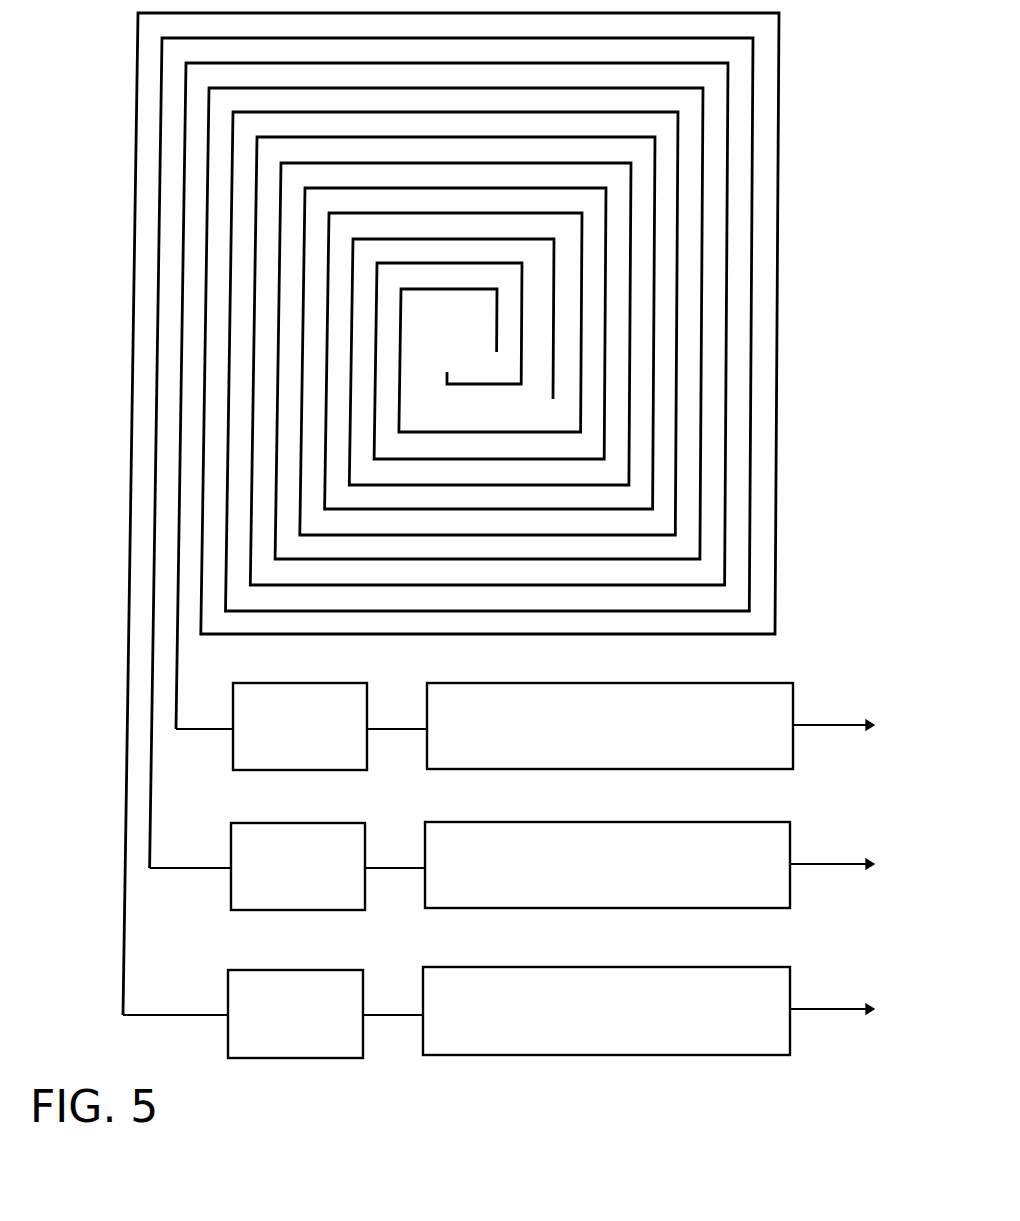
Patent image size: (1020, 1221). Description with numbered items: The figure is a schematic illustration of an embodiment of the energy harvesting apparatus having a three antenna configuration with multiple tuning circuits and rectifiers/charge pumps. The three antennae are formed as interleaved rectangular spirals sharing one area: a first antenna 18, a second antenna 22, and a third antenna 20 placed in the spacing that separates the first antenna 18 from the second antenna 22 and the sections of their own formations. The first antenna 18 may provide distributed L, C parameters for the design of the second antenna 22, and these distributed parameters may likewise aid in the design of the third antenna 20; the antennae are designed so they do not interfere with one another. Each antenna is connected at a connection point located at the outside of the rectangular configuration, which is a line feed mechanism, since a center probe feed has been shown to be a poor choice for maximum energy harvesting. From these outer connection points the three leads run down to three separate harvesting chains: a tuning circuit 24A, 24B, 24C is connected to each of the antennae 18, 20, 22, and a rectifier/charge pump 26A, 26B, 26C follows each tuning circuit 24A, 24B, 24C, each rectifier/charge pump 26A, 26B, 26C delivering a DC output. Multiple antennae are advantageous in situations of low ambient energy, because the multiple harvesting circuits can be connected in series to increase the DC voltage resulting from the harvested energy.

The first antenna 18 is at (127, 572).
The third antenna 20 is at (151, 645).
The second antenna 22 is at (176, 698).
The tuning circuit 24A is at (310, 970).
The tuning circuit 24B is at (311, 823).
The tuning circuit 24C is at (313, 683).
The rectifier/charge pump 26A is at (633, 967).
The rectifier/charge pump 26B is at (637, 822).
The rectifier/charge pump 26C is at (637, 683).